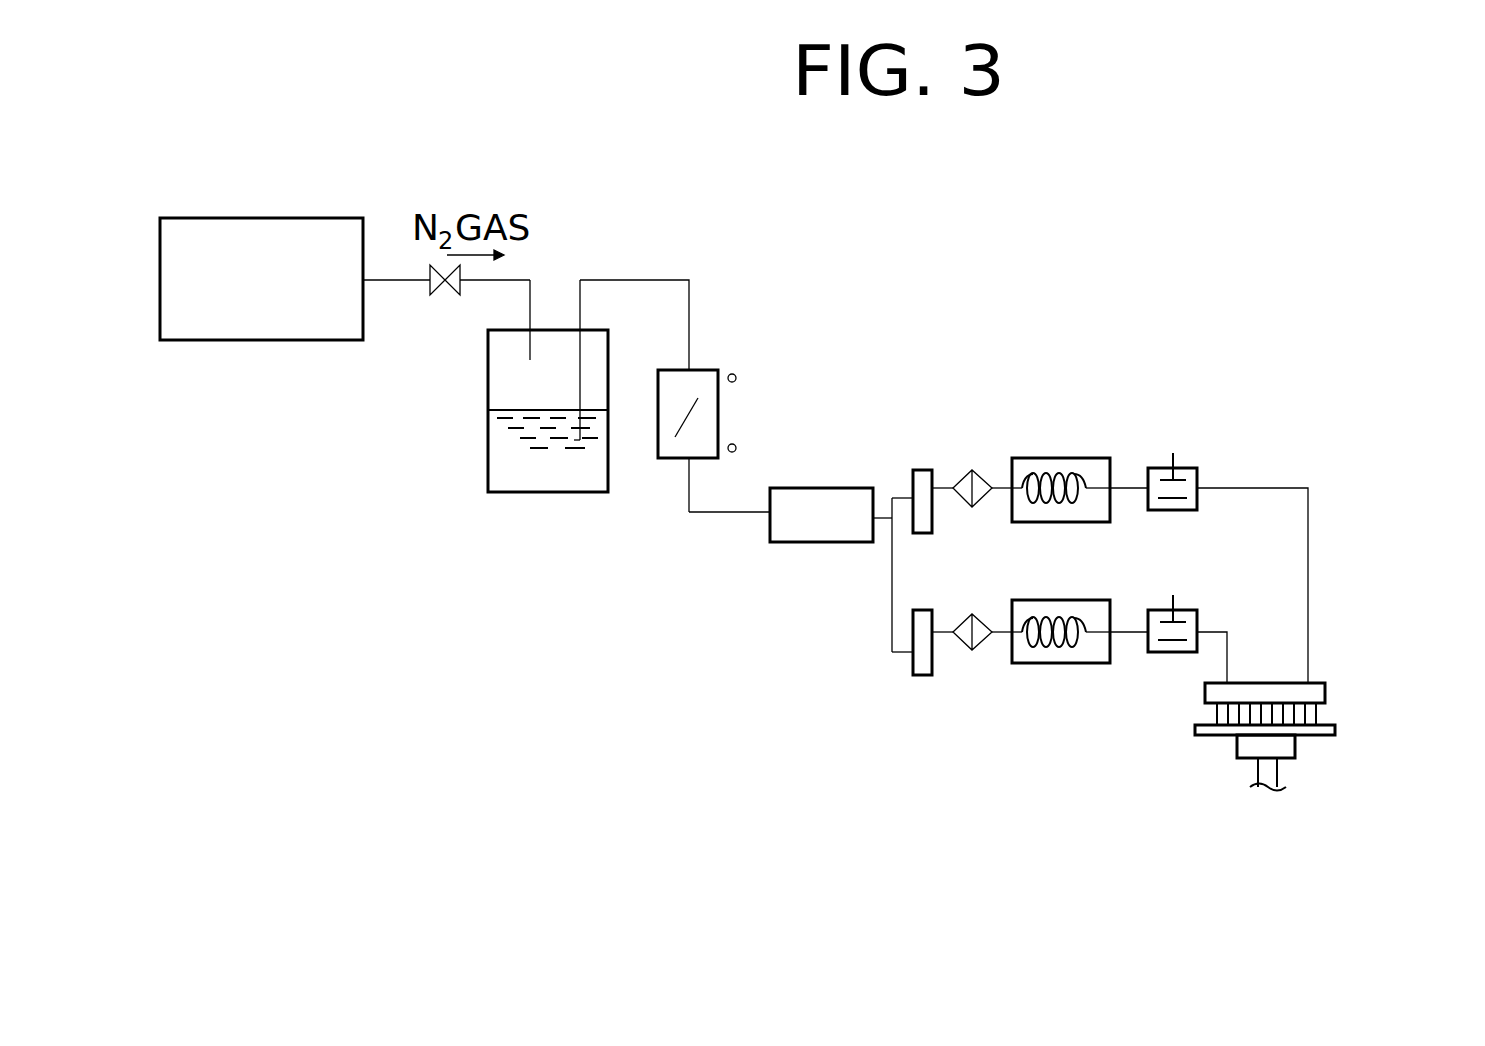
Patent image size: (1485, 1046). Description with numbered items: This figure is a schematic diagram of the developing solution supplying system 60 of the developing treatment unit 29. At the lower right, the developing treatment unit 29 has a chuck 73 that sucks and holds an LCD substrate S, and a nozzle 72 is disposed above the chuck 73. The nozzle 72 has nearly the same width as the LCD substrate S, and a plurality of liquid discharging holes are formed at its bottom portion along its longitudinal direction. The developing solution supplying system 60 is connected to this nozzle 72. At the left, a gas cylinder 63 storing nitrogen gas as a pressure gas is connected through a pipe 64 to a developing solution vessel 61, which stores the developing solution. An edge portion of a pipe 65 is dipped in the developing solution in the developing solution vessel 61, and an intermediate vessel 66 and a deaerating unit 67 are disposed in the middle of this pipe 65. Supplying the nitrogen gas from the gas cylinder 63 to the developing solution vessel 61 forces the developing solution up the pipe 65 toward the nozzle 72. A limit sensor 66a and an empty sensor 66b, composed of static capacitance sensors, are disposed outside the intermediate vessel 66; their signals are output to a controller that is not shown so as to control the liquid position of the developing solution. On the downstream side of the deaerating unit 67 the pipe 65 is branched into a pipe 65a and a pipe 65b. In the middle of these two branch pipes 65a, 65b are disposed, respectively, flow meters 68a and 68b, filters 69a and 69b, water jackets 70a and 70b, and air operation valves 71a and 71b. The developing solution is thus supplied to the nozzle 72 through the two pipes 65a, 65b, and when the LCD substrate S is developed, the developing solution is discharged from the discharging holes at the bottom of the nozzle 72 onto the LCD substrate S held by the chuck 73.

The developing treatment unit 29 is at (1355, 648).
The developing solution supplying system 60 is at (1146, 408).
The developing solution vessel 61 is at (488, 426).
The gas cylinder 63 is at (270, 218).
The pipe 64 is at (520, 279).
The supply pipe 65 is at (670, 279).
The first branch pipe 65a is at (906, 497).
The second branch pipe 65b is at (892, 605).
The intermediate vessel 66 is at (658, 395).
The limit sensor 66a is at (736, 372).
The empty sensor 66b is at (736, 442).
The deaerating unit 67 is at (831, 544).
The flow meter 68a is at (922, 470).
The flow meter 68b is at (922, 610).
The filter 69a is at (977, 470).
The filter 69b is at (972, 650).
The water jacket 70a is at (1063, 458).
The water jacket 70b is at (1057, 600).
The air operation valve 71a is at (1186, 466).
The air operation valve 71b is at (1183, 610).
The nozzle 72 is at (1325, 690).
The chuck 73 is at (1237, 755).
The LCD substrate S is at (1310, 735).